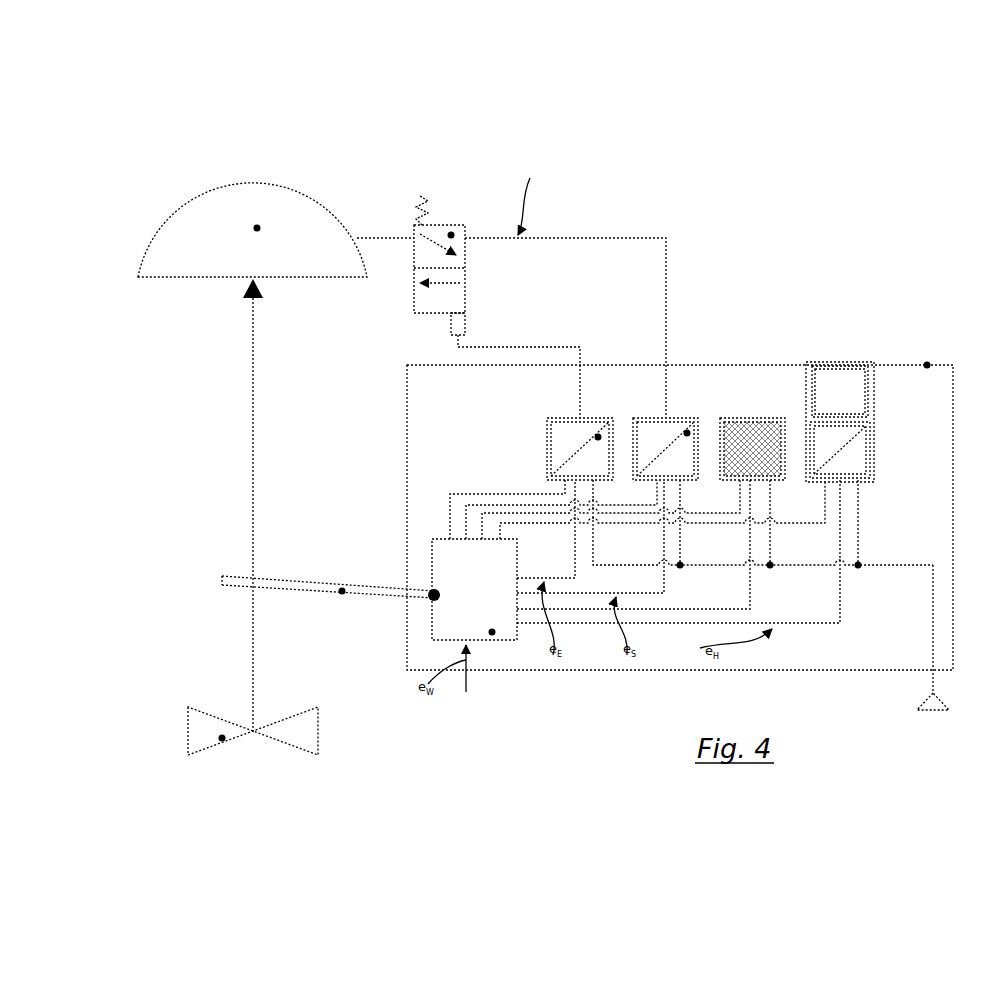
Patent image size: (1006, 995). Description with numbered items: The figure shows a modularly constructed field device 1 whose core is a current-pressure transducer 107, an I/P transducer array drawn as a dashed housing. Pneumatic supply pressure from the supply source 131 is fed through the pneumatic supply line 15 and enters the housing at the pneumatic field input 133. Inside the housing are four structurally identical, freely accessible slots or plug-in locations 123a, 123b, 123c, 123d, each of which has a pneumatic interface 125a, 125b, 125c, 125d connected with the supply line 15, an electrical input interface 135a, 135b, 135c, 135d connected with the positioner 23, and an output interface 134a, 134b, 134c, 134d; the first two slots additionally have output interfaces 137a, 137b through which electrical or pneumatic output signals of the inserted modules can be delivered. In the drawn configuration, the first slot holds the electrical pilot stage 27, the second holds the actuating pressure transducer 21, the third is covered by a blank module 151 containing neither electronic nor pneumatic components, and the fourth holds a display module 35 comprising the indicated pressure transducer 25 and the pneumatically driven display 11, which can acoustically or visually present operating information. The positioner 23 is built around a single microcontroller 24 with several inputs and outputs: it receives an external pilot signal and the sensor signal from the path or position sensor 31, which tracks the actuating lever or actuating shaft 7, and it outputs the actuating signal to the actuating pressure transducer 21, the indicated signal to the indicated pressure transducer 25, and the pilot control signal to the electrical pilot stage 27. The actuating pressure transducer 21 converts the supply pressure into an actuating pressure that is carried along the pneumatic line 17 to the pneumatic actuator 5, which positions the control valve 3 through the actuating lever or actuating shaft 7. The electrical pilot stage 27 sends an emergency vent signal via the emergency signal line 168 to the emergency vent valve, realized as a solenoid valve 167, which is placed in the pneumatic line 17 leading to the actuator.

The field device 1 is at (801, 152).
The control valve 3 is at (222, 738).
The pneumatic actuator 5 is at (257, 228).
The actuating lever or actuating shaft 7 is at (253, 411).
The pneumatically driven display 11 is at (856, 373).
The pneumatic supply line 15 is at (933, 650).
The pneumatic supply line 17 is at (557, 237).
The actuating pressure transducer 21 is at (687, 433).
The positioner 23 is at (511, 645).
The microcontroller 24 is at (492, 633).
The indicated pressure transducer 25 is at (860, 450).
The electrical pilot stage 27 is at (598, 437).
The path or position sensor 31 is at (342, 591).
The display module 35 is at (838, 360).
The current-pressure transducer 107 is at (927, 364).
The slot or plug-in location 123a is at (540, 430).
The slot or plug-in location 123b is at (698, 428).
The slot or plug-in location 123c is at (783, 470).
The slot or plug-in location 123d is at (874, 468).
The pneumatic interface 125a is at (582, 480).
The pneumatic interface 125b is at (666, 480).
The pneumatic interface 125c is at (780, 480).
The pneumatic interface 125d is at (845, 480).
The supply source 131 is at (933, 713).
The pneumatic field input 133 is at (930, 672).
The output interface 134a is at (568, 482).
The output interface 134b is at (655, 480).
The output interface 134c is at (742, 480).
The output interface 134d is at (825, 480).
The electrical input interface 135a is at (567, 480).
The electrical input interface 135b is at (676, 480).
The electrical input interface 135c is at (765, 480).
The electrical input interface 135d is at (862, 480).
The output interface 137a is at (578, 417).
The output interface 137b is at (668, 418).
The blank module 151 is at (748, 437).
The solenoid valve 167 is at (451, 235).
The emergency signal line 168 is at (515, 347).